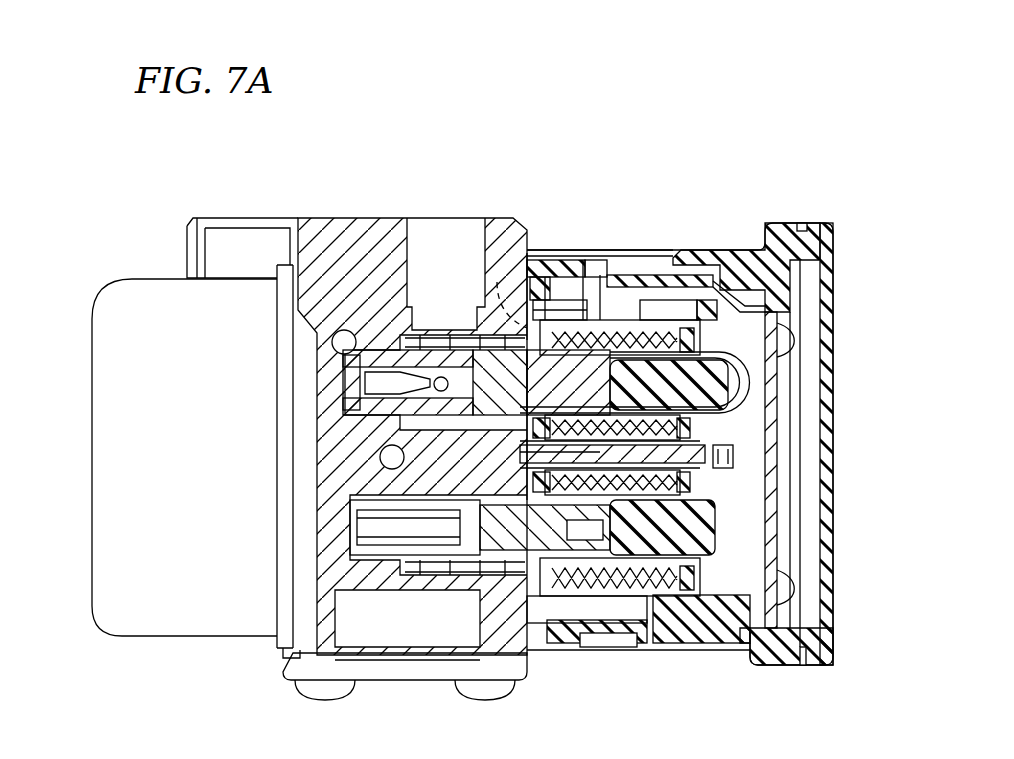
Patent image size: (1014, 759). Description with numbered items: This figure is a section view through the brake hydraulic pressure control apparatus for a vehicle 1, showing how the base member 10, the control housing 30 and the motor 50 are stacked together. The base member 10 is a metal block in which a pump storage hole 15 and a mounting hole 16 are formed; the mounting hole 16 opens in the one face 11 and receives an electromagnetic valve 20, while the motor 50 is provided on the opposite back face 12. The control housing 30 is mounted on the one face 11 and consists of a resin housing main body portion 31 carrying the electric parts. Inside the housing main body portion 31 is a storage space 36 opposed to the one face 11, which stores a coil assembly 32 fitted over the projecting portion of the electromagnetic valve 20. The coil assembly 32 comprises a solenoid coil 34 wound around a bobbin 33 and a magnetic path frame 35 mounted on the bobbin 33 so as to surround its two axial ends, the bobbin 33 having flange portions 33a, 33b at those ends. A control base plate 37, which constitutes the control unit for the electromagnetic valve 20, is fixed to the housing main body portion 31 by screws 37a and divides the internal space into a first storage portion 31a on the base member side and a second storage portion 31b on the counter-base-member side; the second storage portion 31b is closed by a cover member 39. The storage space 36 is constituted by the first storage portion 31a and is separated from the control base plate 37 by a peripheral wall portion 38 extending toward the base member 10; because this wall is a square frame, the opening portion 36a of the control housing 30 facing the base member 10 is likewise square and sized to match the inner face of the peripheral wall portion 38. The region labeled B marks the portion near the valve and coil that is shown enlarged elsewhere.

The brake hydraulic pressure control apparatus for a vehicle 1 is at (541, 180).
The base member 10 is at (338, 230).
The one face 11 is at (537, 662).
The back face 12 is at (276, 650).
The pump storage hole 15 is at (335, 470).
The mounting hole 16 is at (440, 342).
The electromagnetic valve 20 is at (750, 375).
The control housing 30 is at (748, 262).
The housing main body portion 31 is at (730, 640).
The first storage portion 31a is at (772, 428).
The second storage portion 31b is at (802, 456).
The coil assembly 32 is at (725, 173).
The bobbin 33 is at (620, 340).
The flange portion 33a is at (687, 292).
The flange portion 33b is at (590, 353).
The solenoid coil 34 is at (652, 332).
The magnetic path frame 35 is at (690, 312).
The storage space 36 is at (754, 504).
The opening portion 36a is at (435, 488).
The control base plate 37 is at (775, 540).
The screw 37a is at (790, 343).
The peripheral wall portion 38 is at (593, 640).
The cover member 39 is at (824, 290).
The motor 50 is at (112, 450).
The B portion B is at (519, 239).